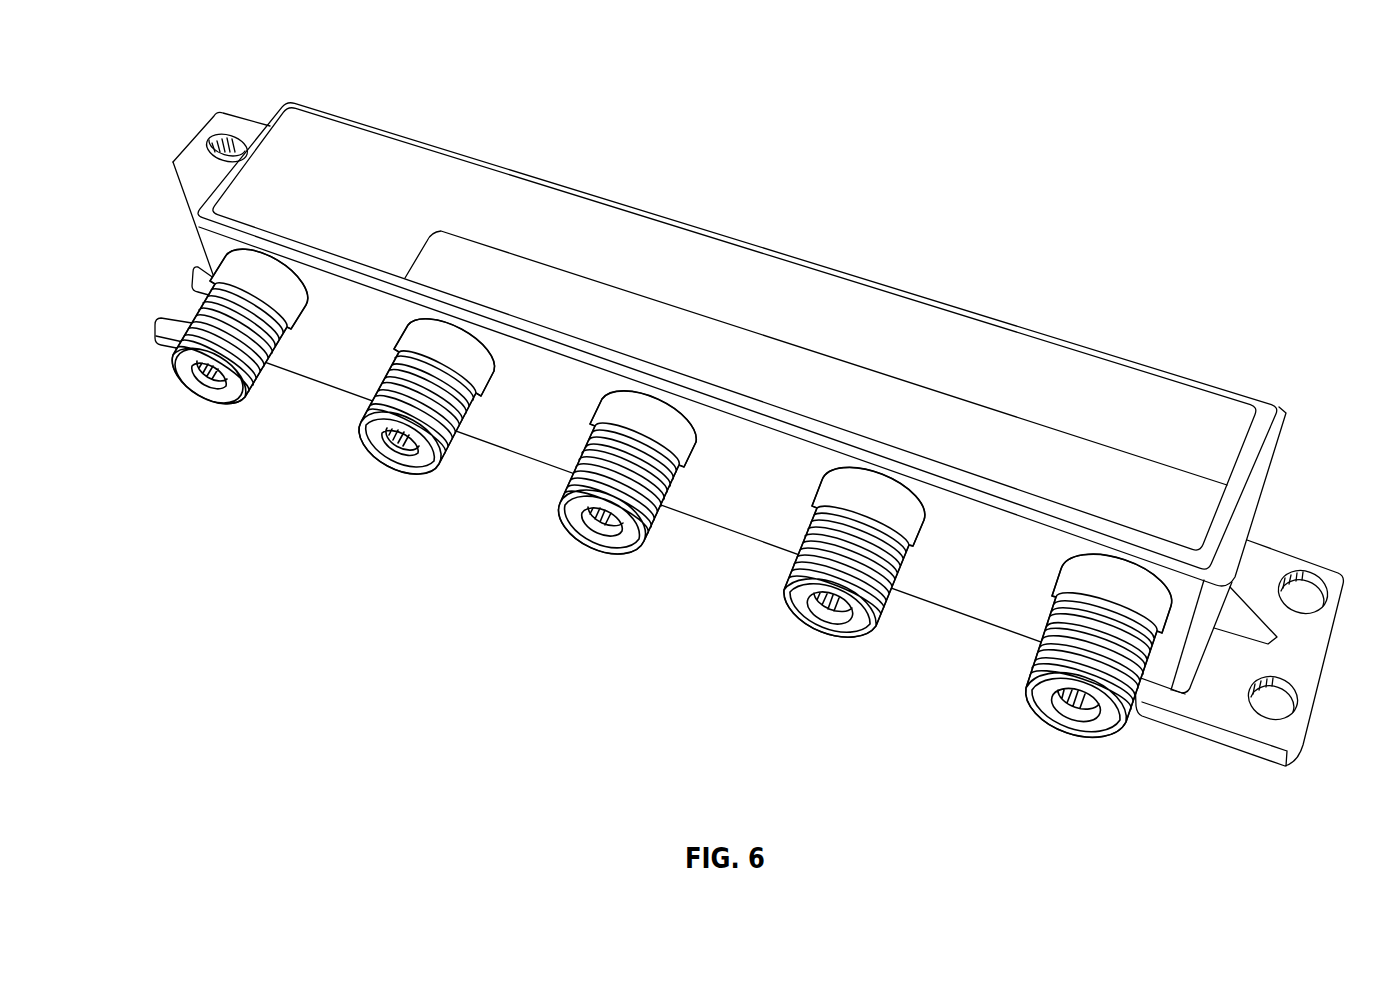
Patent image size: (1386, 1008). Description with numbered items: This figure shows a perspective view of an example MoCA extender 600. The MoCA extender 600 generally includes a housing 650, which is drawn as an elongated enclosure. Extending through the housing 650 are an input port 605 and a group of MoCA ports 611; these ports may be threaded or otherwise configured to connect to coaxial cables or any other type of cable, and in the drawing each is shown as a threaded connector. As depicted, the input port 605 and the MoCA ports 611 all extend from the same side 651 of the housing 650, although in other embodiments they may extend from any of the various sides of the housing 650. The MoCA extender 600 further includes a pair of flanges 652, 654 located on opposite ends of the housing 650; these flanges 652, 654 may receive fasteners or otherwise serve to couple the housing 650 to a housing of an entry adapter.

The MoCA extender 600 is at (510, 84).
The input port 605 is at (203, 388).
The MoCA ports 611 is at (389, 462).
The housing 650 is at (1071, 360).
The side 651 is at (732, 516).
The flange 652 is at (1284, 560).
The flange 654 is at (157, 320).